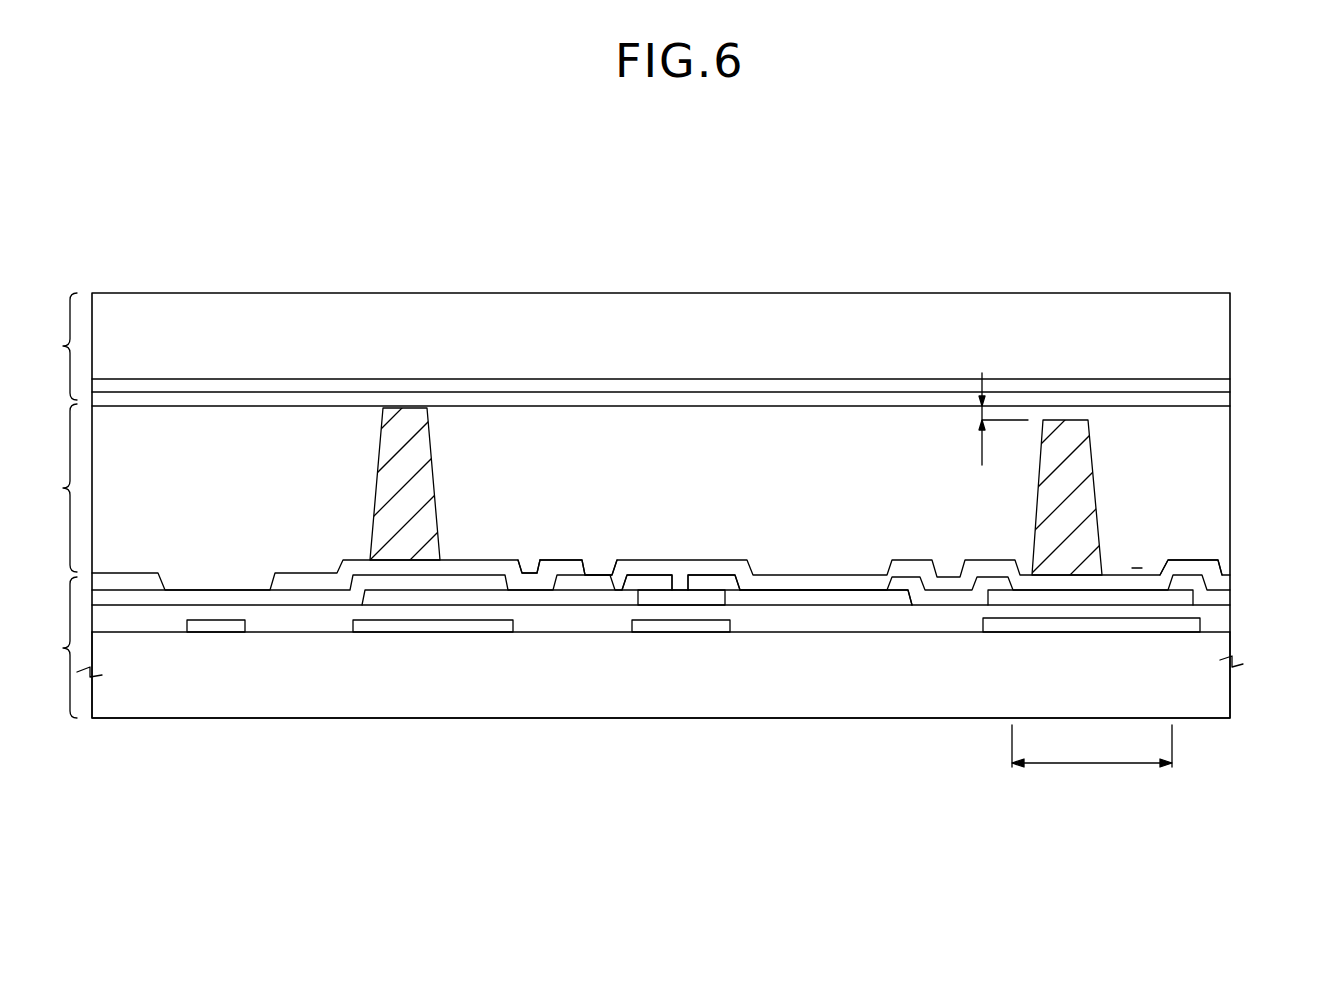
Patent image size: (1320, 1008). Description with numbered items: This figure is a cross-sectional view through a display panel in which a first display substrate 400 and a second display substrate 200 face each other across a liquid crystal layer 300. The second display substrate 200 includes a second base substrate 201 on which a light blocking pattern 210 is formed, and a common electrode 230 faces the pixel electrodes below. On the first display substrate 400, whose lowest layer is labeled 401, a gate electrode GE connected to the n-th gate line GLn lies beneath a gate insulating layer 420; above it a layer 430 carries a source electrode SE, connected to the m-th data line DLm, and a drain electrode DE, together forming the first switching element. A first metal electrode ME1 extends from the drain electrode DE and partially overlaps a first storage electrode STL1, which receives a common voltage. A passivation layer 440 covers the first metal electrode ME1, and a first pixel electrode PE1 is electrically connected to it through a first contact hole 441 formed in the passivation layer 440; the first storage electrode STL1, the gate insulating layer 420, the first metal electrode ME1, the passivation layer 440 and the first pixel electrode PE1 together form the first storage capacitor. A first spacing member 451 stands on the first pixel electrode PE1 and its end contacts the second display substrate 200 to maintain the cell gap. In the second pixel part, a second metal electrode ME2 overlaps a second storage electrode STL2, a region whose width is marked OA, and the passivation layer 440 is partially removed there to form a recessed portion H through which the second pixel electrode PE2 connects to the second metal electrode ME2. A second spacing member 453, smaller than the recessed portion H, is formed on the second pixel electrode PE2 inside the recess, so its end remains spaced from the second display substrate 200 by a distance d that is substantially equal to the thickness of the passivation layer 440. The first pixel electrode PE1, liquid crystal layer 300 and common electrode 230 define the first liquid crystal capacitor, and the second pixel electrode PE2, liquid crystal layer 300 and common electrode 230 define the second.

The second display substrate 200 is at (47, 346).
The second base substrate 201 is at (1222, 333).
The light blocking pattern 210 is at (1222, 383).
The common electrode 230 is at (1222, 403).
The liquid crystal layer 300 is at (47, 488).
The first display substrate 400 is at (47, 647).
The lower base substrate 401 is at (1243, 663).
The gate insulating layer 420 is at (1222, 617).
The active layer 430 is at (708, 603).
The passivation layer 440 is at (1222, 594).
The first contact hole 441 is at (532, 566).
The first spacing member 451 is at (417, 452).
The second spacing member 453 is at (1083, 452).
The n-th gate line GLn is at (220, 627).
The first storage electrode STL1 is at (412, 627).
The second storage electrode STL2 is at (1153, 628).
The first metal electrode ME1 is at (487, 600).
The second metal electrode ME2 is at (1170, 598).
The drain electrode DE is at (557, 600).
The source electrode SE is at (613, 600).
The gate electrode GE is at (660, 627).
The m-th data line DLm is at (855, 598).
The first pixel electrode PE1 is at (568, 562).
The second pixel electrode PE2 is at (1190, 565).
The recessed portion H is at (1137, 567).
The opening area OA is at (1092, 746).
The distance d is at (995, 419).